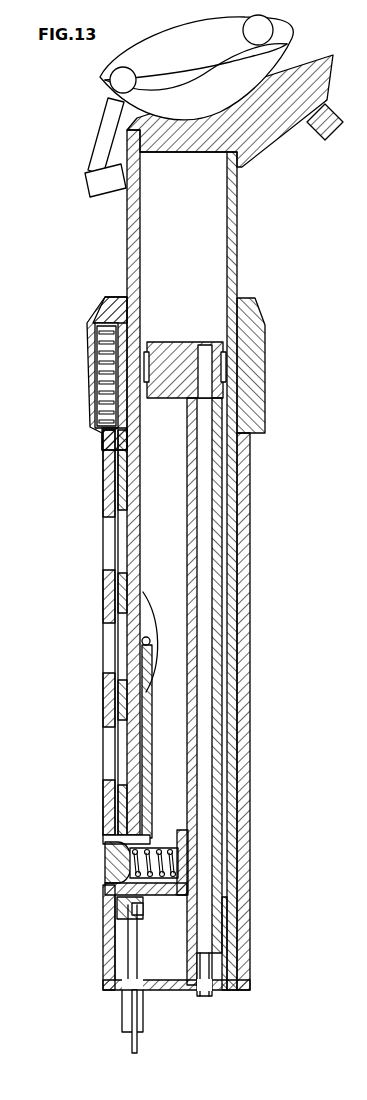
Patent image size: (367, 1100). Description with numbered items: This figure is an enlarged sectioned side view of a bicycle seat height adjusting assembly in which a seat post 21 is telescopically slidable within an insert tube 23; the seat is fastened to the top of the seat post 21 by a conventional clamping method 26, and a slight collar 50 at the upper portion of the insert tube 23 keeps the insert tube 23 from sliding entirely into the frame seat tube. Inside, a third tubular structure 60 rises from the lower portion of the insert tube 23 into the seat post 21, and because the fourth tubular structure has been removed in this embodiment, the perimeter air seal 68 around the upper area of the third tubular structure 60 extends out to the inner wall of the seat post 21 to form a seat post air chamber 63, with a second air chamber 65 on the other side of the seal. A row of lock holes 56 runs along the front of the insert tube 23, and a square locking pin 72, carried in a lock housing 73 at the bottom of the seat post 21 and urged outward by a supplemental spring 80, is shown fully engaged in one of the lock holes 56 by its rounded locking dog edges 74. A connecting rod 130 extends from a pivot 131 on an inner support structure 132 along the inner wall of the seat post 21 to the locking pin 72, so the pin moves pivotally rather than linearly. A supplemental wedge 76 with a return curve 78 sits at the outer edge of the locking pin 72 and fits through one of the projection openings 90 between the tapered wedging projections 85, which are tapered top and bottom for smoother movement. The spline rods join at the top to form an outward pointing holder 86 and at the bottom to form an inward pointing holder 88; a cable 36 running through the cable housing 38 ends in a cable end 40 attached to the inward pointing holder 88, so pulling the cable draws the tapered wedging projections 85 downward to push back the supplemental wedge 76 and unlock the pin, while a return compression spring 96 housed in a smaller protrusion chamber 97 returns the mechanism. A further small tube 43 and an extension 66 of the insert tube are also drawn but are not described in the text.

The seat post 21 is at (133, 250).
The insert tube 23 is at (243, 502).
The clamping method 26 is at (153, 80).
The cable 36 is at (132, 1045).
The cable housing 38 is at (122, 1015).
The cable end 40 is at (103, 983).
The drain tube 43 is at (145, 993).
The collar 50 is at (90, 352).
The lock holes 56 is at (107, 555).
The third tubular structure 60 is at (215, 555).
The seat post air chamber 63 is at (178, 266).
The second air chamber 65 is at (205, 455).
The sleeve extension 66 is at (258, 380).
The perimeter air seal 68 is at (168, 362).
The locking pin 72 is at (118, 910).
The lock housing 73 is at (180, 845).
The locking dog edges 74 is at (110, 893).
The supplemental wedge 76 is at (115, 857).
The return curve 78 is at (108, 872).
The supplemental spring 80 is at (170, 870).
The tapered wedging projections 85 is at (107, 497).
The outward pointing holder 86 is at (103, 320).
The inward pointing holder 88 is at (127, 935).
The projection openings 90 is at (122, 530).
The return compression spring 96 is at (97, 380).
The protrusion chamber 97 is at (97, 413).
The connecting rod 130 is at (152, 803).
The pivot 131 is at (148, 640).
The inner support structure 132 is at (148, 612).